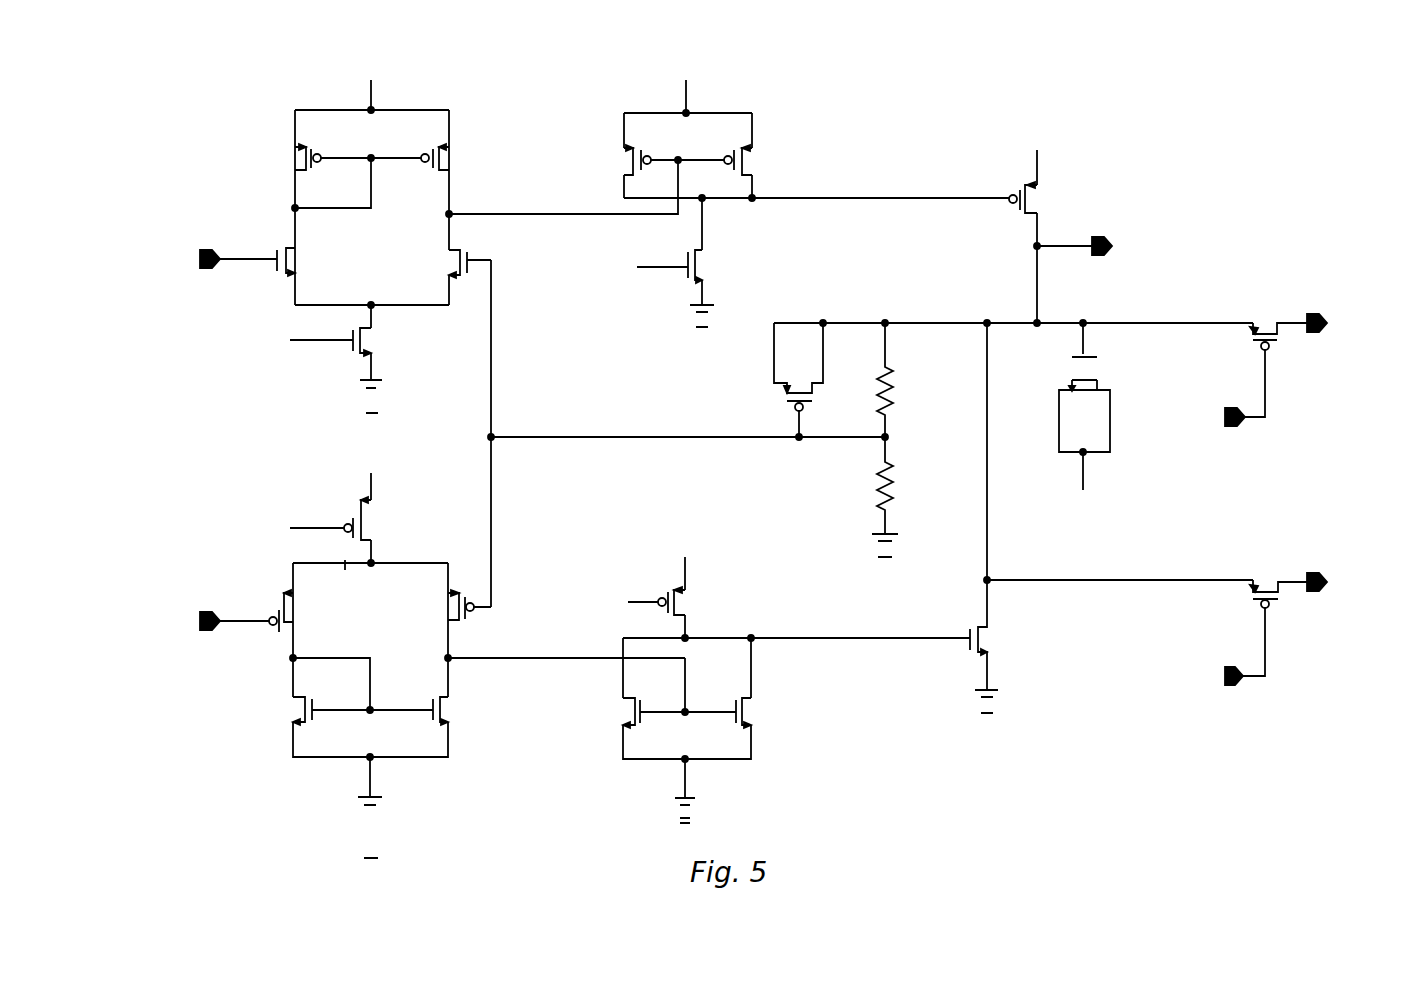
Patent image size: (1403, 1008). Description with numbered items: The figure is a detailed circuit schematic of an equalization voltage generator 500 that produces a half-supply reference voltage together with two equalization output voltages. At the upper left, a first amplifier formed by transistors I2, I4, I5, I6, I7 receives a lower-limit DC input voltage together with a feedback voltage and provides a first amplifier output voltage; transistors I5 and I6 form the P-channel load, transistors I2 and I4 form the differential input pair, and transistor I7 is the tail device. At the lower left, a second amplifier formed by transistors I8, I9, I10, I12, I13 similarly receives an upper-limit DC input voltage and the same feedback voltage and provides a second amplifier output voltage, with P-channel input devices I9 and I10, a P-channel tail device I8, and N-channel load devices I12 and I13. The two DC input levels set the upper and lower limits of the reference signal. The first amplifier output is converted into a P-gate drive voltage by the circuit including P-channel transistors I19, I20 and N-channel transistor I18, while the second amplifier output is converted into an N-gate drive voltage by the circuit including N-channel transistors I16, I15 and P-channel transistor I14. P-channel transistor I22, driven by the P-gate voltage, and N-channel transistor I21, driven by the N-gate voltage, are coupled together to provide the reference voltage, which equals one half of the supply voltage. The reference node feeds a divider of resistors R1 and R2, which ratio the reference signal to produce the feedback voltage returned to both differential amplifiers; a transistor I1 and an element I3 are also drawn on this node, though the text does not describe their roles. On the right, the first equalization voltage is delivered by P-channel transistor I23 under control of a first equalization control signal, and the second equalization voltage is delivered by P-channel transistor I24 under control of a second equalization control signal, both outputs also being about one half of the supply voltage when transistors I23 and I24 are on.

The voltage generator 500 is at (194, 98).
The transistor I1 is at (798, 380).
The transistor of first amplifier I2 is at (257, 267).
The component I3 is at (1079, 406).
The transistor of first amplifier I4 is at (470, 256).
The transistor of first amplifier I5 is at (429, 167).
The transistor of first amplifier I6 is at (314, 167).
The transistor of first amplifier I7 is at (330, 352).
The transistor of second amplifier I8 is at (330, 518).
The transistor of second amplifier I9 is at (256, 607).
The transistor of second amplifier I10 is at (471, 624).
The transistor of second amplifier I12 is at (409, 726).
The transistor of second amplifier I13 is at (331, 725).
The P-channel transistor I14 is at (656, 596).
The N-channel transistor I15 is at (718, 735).
The N-channel transistor I16 is at (654, 727).
The N-channel transistor I18 is at (669, 273).
The P-channel transistor I19 is at (647, 155).
The P-channel transistor I20 is at (728, 155).
The N-channel transistor I21 is at (869, 641).
The P-channel transistor I22 is at (1011, 194).
The P-channel transistor I23 is at (1267, 370).
The P-channel transistor I24 is at (1267, 628).
The resistor R1 is at (916, 383).
The resistor R2 is at (916, 485).